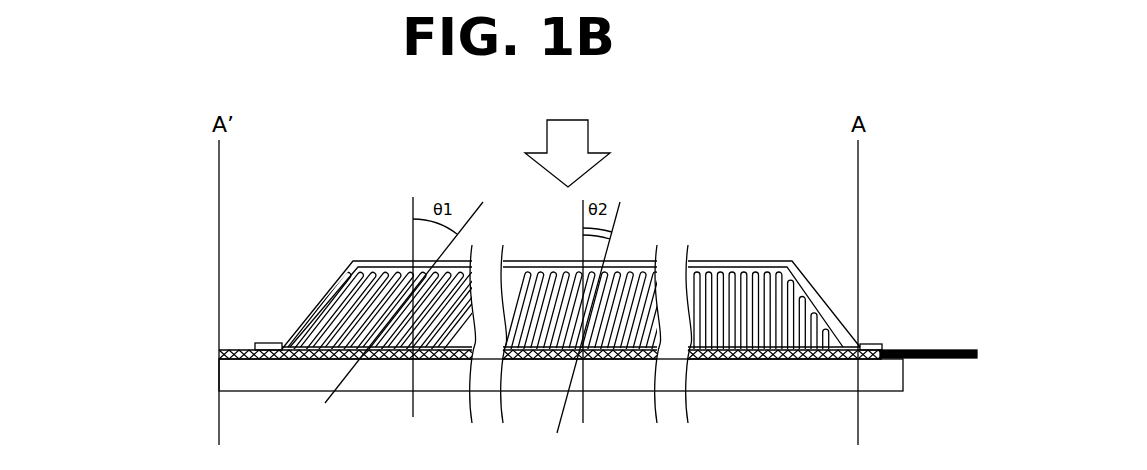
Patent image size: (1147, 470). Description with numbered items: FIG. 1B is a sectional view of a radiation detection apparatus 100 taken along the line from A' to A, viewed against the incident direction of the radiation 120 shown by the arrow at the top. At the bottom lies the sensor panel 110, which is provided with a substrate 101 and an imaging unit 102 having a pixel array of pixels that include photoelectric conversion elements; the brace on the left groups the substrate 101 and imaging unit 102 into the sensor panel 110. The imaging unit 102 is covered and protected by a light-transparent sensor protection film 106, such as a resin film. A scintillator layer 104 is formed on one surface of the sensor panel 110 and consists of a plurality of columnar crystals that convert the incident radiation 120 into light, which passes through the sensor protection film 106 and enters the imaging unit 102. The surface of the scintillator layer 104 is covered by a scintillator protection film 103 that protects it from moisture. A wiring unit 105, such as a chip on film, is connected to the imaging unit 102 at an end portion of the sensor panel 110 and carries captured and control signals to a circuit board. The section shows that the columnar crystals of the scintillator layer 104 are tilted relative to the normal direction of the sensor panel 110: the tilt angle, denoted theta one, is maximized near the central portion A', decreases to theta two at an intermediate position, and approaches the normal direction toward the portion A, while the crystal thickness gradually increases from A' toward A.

The radiation detection apparatus 100 is at (362, 222).
The substrate 101 is at (232, 377).
The imaging unit 102 is at (235, 354).
The scintillator protection film 103 is at (352, 265).
The scintillator layer 104 is at (735, 288).
The wiring unit 105 is at (952, 348).
The sensor protection film 106 is at (311, 348).
The sensor panel 110 is at (487, 346).
The radiation 120 is at (592, 128).